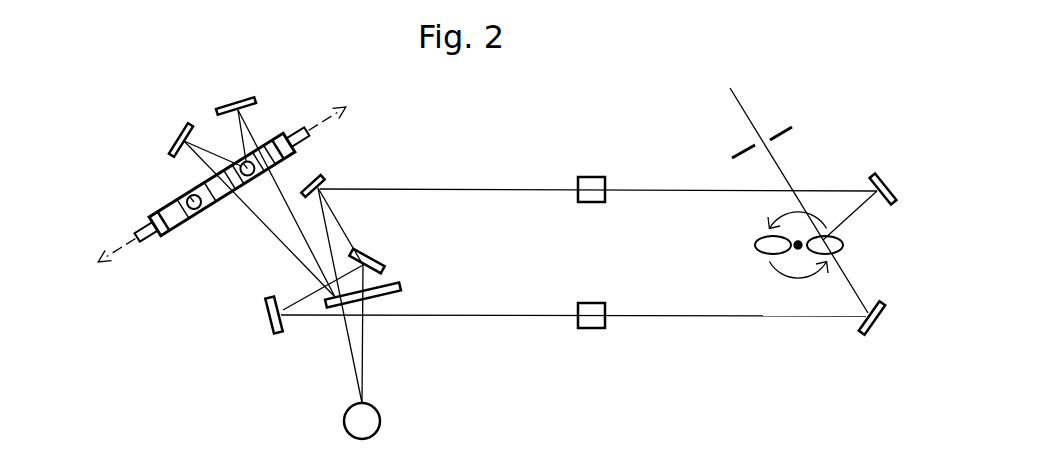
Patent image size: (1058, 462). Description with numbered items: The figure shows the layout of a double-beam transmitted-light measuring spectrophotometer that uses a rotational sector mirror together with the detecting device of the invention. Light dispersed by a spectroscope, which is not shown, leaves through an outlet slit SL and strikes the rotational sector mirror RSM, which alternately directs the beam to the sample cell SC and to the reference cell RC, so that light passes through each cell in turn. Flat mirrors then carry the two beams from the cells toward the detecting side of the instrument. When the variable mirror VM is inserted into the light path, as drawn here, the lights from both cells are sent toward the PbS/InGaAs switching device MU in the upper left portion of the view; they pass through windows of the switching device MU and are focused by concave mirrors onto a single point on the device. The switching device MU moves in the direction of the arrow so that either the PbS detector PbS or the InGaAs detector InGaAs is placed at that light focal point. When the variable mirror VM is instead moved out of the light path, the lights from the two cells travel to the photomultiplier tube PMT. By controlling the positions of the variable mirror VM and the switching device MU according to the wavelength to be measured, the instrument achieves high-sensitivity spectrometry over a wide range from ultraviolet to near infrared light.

The PbS/InGaAs switching device MU is at (161, 238).
The InGaAs detector InGaAs is at (185, 195).
The PbS detector PbS is at (251, 162).
The variable mirror VM is at (383, 295).
The photomultiplier tube PMT is at (386, 421).
The reference cell RC is at (591, 175).
The sample cell SC is at (591, 303).
The outlet slit SL is at (789, 200).
The rotational sector mirror RSM is at (770, 245).